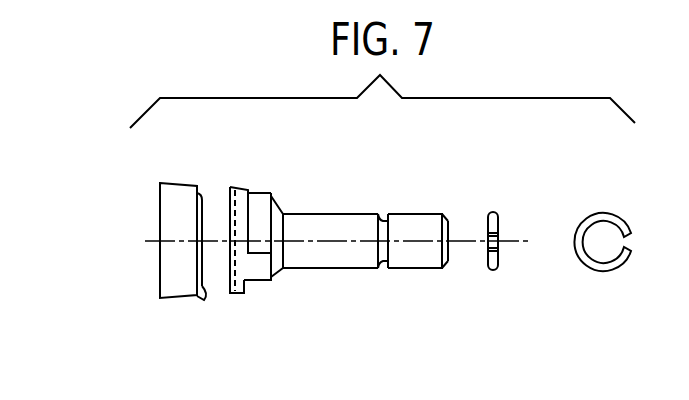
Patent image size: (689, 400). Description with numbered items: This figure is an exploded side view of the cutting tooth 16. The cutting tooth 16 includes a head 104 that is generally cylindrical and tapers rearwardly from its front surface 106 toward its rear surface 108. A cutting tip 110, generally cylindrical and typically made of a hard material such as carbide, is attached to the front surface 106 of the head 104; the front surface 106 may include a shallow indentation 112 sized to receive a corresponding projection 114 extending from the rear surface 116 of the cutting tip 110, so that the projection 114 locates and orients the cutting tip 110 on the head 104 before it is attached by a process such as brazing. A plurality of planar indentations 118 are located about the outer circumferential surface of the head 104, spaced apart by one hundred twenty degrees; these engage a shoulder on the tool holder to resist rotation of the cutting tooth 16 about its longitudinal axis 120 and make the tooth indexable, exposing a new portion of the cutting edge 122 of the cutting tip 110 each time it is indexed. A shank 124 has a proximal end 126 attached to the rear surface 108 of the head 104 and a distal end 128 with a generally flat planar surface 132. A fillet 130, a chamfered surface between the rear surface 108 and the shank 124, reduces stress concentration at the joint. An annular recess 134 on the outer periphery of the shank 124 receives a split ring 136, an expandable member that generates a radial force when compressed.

The cutting tooth 16 is at (381, 76).
The head 104 is at (235, 276).
The front surface 106 is at (230, 268).
The rear surface 108 is at (258, 218).
The cutting tip 110 is at (173, 183).
The indentation 112 is at (229, 293).
The projection 114 is at (201, 198).
The rear surface 116 is at (203, 291).
The planar indentations 118 is at (284, 225).
The longitudinal axis 120 is at (150, 240).
The cutting edge 122 is at (158, 183).
The shank 124 is at (407, 268).
The proximal end 126 is at (283, 270).
The distal end 128 is at (445, 265).
The fillet 130 is at (278, 270).
The planar surface 132 is at (448, 228).
The annular recess 134 is at (380, 268).
The split ring 136 is at (498, 227).